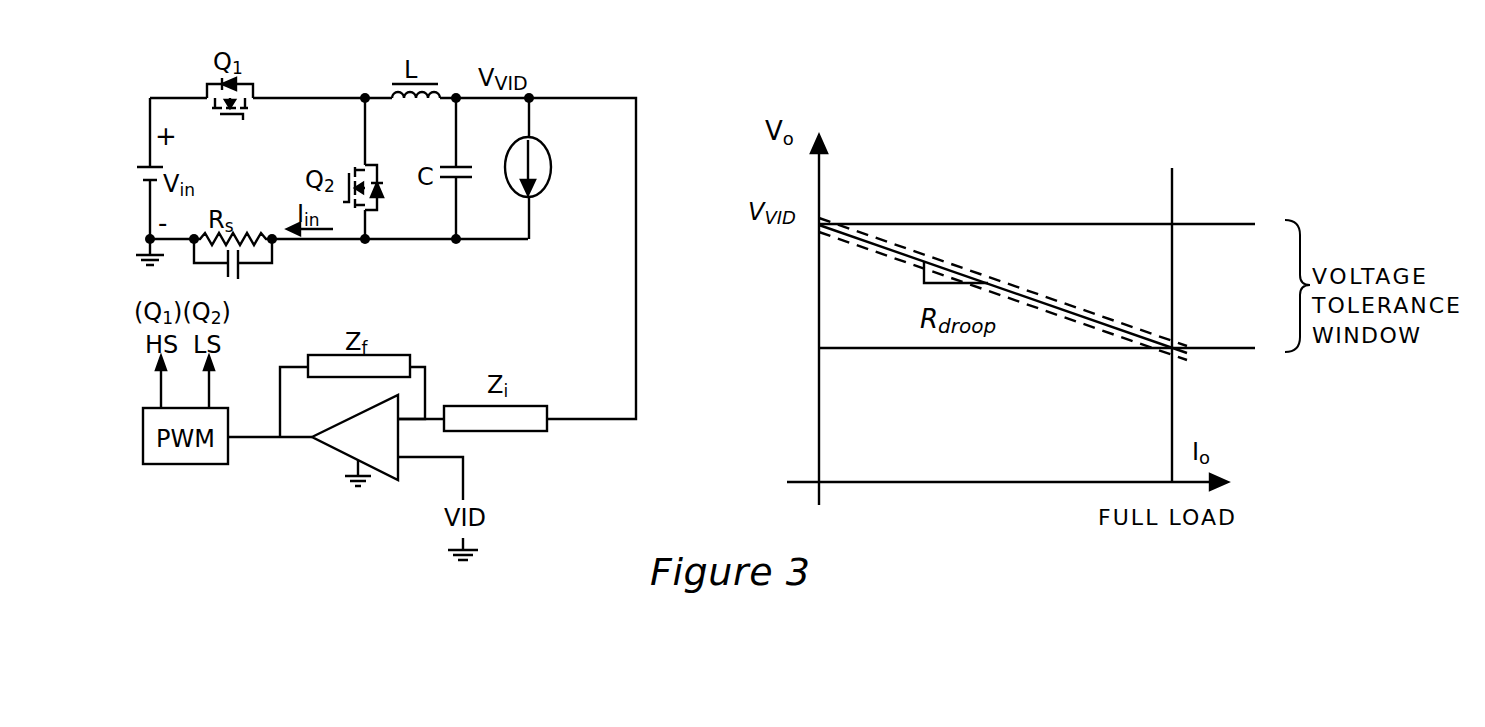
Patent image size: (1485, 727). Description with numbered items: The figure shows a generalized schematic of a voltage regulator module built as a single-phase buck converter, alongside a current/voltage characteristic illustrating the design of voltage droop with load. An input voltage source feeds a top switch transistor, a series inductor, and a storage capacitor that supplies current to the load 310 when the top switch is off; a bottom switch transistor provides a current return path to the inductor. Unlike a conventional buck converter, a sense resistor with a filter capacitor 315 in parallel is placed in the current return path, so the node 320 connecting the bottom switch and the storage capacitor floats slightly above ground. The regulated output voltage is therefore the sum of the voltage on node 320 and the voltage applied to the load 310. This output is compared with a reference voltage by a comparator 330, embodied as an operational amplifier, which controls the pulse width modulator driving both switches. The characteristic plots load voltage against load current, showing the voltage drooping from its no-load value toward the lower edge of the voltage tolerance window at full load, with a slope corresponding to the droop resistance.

The load 310 is at (538, 200).
The filter capacitor 315 is at (239, 278).
The node 320 is at (435, 240).
The comparator 330 is at (340, 452).